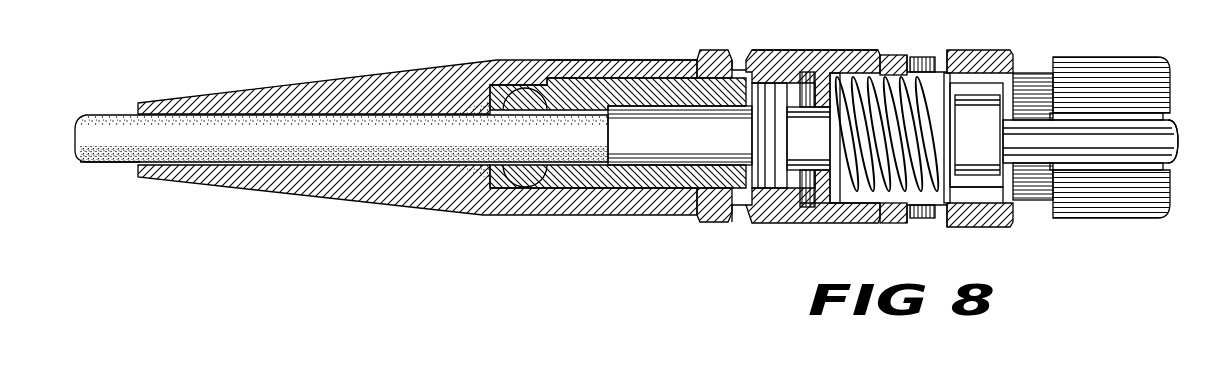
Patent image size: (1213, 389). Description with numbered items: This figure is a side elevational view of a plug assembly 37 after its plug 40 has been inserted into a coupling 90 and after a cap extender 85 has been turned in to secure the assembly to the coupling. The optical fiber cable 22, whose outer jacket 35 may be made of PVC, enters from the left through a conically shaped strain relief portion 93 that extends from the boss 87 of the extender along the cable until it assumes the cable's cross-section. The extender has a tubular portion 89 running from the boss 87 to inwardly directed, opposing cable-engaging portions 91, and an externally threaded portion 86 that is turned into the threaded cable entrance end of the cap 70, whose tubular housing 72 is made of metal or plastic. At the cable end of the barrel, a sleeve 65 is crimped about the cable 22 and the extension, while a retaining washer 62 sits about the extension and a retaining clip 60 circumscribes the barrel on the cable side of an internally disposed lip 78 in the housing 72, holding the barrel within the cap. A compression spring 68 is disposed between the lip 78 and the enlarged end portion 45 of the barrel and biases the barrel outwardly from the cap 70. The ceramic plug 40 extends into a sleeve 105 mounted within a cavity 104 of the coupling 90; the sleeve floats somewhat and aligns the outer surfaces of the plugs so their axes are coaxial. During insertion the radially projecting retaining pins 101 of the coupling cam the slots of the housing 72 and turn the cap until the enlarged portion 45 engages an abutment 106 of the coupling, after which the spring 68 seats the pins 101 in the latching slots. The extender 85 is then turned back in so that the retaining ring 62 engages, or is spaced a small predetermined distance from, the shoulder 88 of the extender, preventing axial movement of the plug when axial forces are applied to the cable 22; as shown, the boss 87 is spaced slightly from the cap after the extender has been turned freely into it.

The optical fiber cable 22 is at (124, 113).
The outer jacket 35 is at (98, 164).
The strain relief portion 93 is at (393, 78).
The cable-engaging portions 91 is at (547, 85).
The tubular portion 89 is at (588, 90).
The cap extender 85 is at (625, 82).
The boss 87 is at (703, 50).
The shoulder 88 is at (772, 82).
The threaded portion 86 is at (788, 78).
The compression spring 68 is at (848, 92).
The plug assembly 37 is at (880, 44).
The tubular housing 72 is at (905, 56).
The retaining pins 101 is at (940, 56).
The cap 70 is at (975, 41).
The coupling 90 is at (1090, 57).
The plug 40 is at (1040, 135).
The enlarged end portion 45 is at (992, 115).
The sleeve 105 is at (1168, 115).
The cavity 104 is at (1176, 148).
The abutment 106 is at (1000, 202).
The lip 78 is at (820, 197).
The sleeve 65 is at (660, 139).
The retaining washer 62 is at (754, 128).
The retaining clip 60 is at (788, 145).